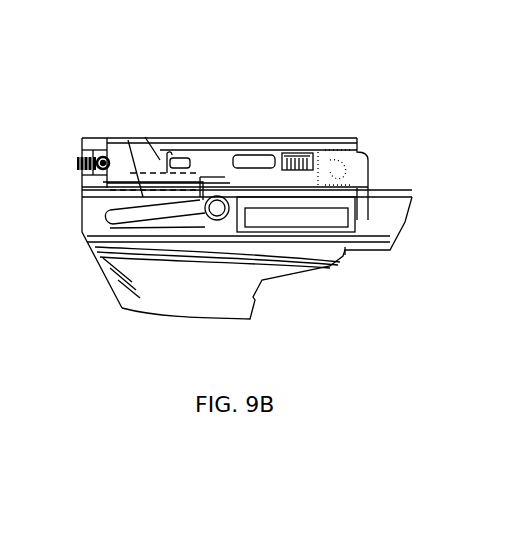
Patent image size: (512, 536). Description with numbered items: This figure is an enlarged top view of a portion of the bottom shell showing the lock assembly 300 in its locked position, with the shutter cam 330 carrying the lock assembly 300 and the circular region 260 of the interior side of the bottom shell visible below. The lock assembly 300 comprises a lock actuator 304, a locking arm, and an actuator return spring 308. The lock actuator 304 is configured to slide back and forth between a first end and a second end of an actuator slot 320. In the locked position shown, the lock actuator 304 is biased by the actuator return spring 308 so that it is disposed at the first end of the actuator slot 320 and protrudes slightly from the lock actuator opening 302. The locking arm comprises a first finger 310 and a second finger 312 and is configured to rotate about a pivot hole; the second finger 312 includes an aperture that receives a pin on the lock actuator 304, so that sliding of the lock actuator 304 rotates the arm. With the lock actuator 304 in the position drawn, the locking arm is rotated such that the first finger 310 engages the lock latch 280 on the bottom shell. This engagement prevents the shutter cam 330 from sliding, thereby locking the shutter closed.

The lock assembly 300 is at (243, 55).
The lock actuator opening 302 is at (130, 137).
The lock actuator 304 is at (145, 137).
The actuator return spring 308 is at (318, 152).
The first finger 310 is at (120, 216).
The second finger 312 is at (228, 178).
The actuator slot 320 is at (300, 152).
The shutter cam 330 is at (365, 172).
The lock latch 280 is at (160, 233).
The circular region 260 is at (305, 265).